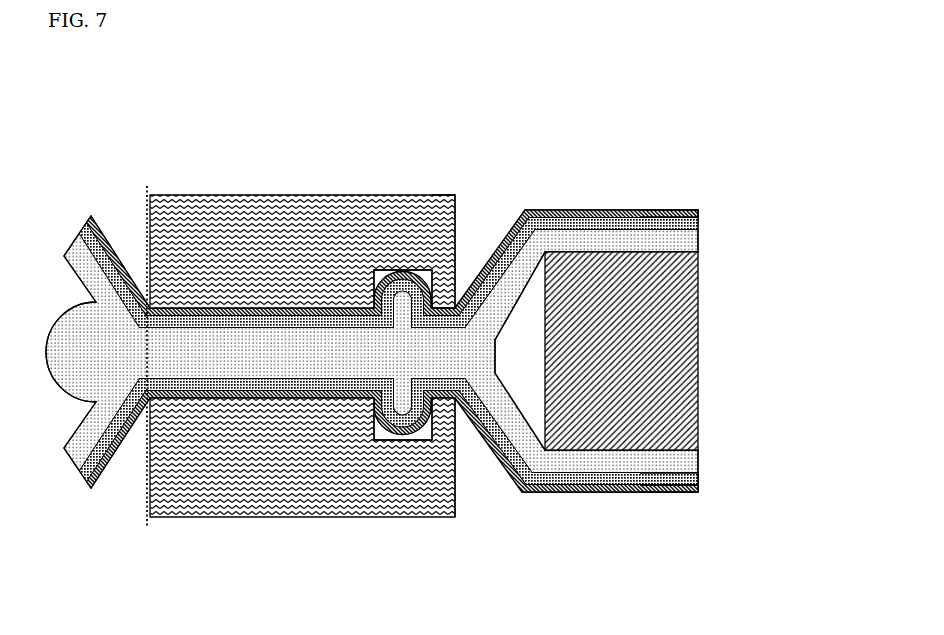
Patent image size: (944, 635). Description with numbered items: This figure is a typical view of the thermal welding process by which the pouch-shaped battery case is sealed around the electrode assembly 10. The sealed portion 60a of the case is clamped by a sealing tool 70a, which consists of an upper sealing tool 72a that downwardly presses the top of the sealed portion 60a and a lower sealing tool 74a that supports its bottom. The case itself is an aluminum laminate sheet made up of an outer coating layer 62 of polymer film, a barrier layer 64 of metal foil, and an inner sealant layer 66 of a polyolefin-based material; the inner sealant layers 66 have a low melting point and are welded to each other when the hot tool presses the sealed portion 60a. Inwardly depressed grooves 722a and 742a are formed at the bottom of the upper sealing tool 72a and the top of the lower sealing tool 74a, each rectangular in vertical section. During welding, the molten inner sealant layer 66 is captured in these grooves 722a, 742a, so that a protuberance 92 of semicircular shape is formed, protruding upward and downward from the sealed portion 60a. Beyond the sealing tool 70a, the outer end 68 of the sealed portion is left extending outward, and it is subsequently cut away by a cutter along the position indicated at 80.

The electrode assembly 10 is at (695, 328).
The sealed portion 60a is at (266, 405).
The outer coating layer 62 is at (695, 497).
The barrier layer 64 is at (699, 214).
The inner sealant layer 66 is at (698, 468).
The outer end 68 is at (84, 210).
The sealing tool 70a is at (362, 178).
The upper sealing tool 72a is at (439, 198).
The groove 722a is at (447, 258).
The lower sealing tool 74a is at (414, 522).
The groove 742a is at (406, 440).
The cutter 80 is at (146, 172).
The protuberance 92 is at (456, 452).